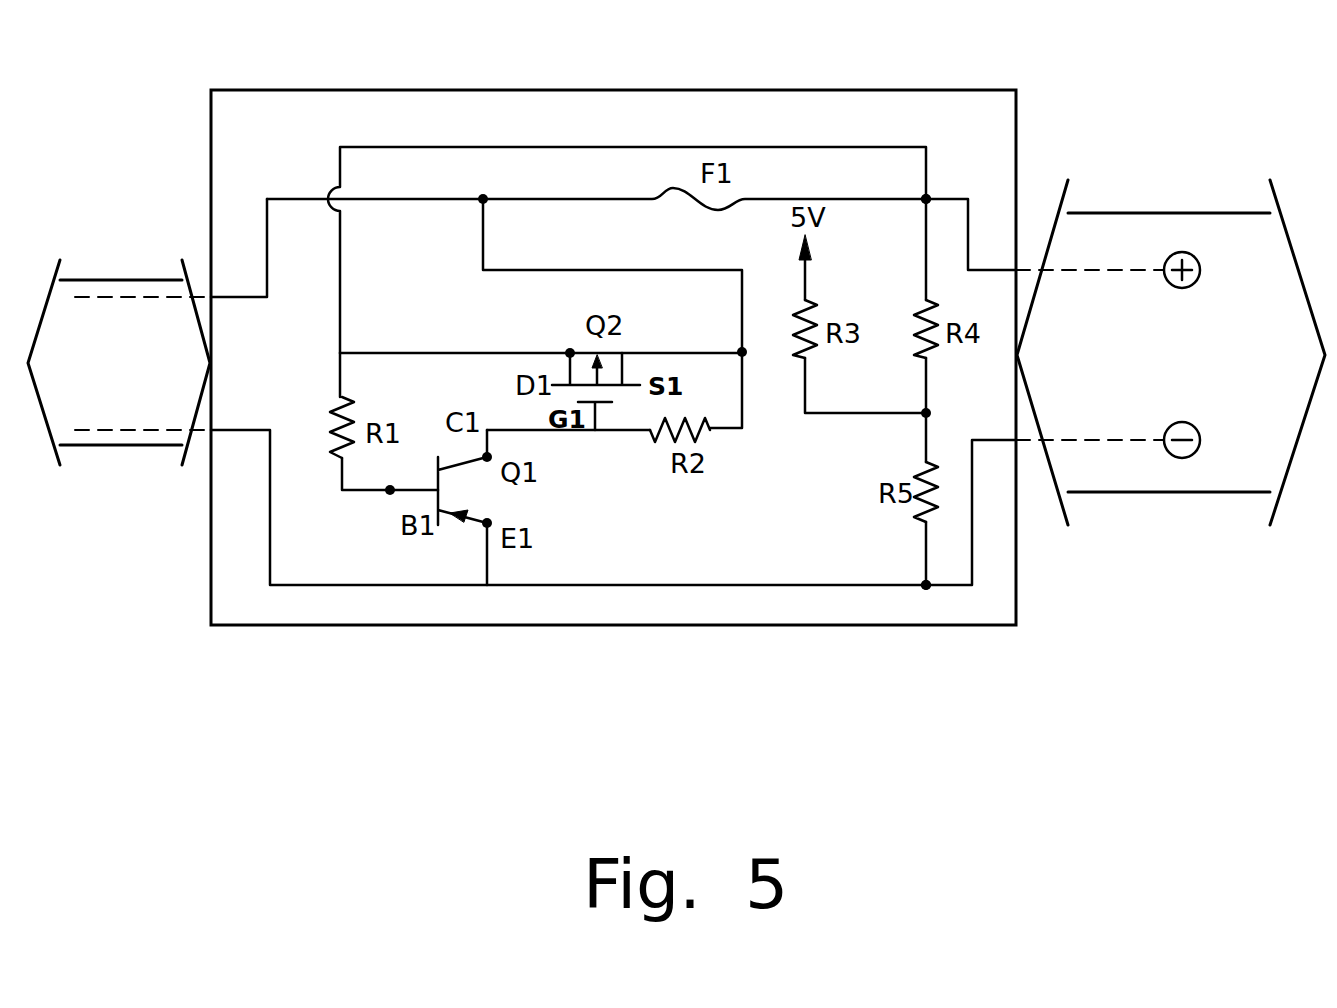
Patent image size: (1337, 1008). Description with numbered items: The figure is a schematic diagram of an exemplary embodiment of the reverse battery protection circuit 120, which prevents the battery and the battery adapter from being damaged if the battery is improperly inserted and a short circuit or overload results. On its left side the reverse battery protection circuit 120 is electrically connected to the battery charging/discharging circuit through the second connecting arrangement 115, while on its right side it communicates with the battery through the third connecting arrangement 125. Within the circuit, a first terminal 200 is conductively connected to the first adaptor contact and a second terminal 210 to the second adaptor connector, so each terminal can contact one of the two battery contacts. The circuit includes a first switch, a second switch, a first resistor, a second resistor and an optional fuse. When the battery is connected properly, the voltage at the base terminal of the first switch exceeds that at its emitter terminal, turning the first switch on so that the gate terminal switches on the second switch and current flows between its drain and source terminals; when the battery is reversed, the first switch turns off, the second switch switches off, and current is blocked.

The second connecting arrangement 115 is at (115, 446).
The reverse battery protection circuit 120 is at (828, 90).
The third connecting arrangement 125 is at (1150, 494).
The first terminal 200 is at (928, 197).
The second terminal 210 is at (924, 583).